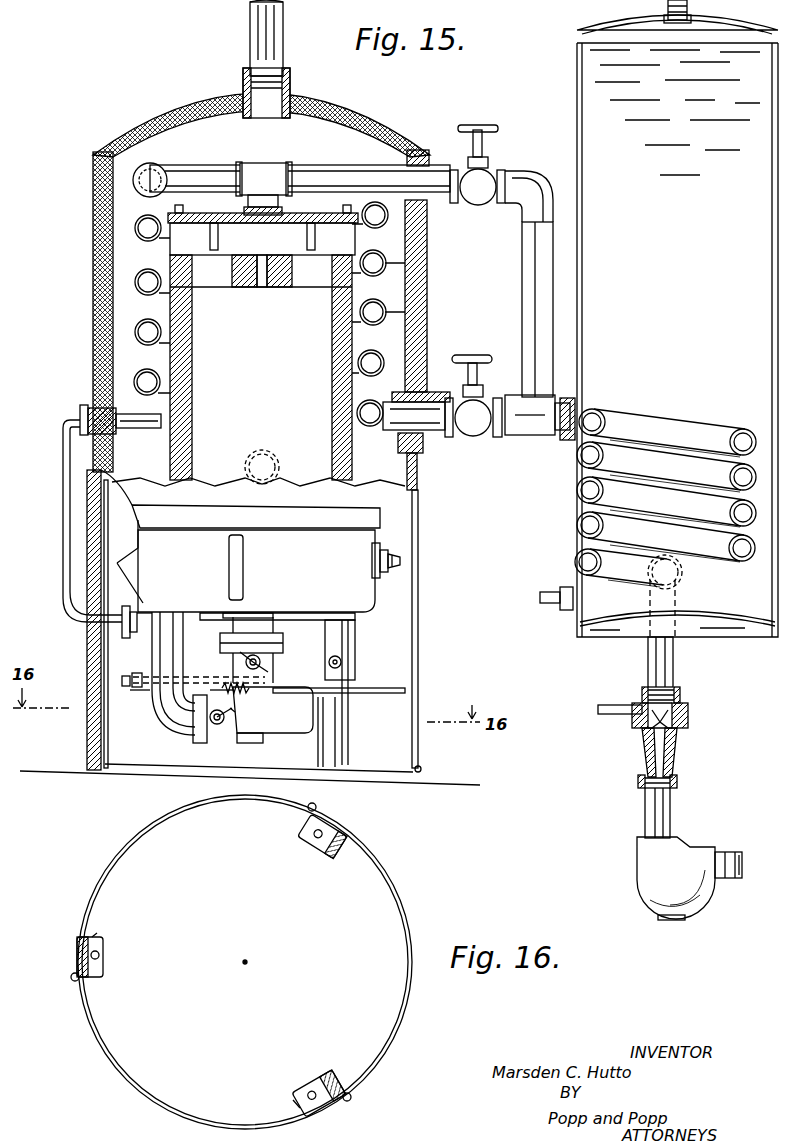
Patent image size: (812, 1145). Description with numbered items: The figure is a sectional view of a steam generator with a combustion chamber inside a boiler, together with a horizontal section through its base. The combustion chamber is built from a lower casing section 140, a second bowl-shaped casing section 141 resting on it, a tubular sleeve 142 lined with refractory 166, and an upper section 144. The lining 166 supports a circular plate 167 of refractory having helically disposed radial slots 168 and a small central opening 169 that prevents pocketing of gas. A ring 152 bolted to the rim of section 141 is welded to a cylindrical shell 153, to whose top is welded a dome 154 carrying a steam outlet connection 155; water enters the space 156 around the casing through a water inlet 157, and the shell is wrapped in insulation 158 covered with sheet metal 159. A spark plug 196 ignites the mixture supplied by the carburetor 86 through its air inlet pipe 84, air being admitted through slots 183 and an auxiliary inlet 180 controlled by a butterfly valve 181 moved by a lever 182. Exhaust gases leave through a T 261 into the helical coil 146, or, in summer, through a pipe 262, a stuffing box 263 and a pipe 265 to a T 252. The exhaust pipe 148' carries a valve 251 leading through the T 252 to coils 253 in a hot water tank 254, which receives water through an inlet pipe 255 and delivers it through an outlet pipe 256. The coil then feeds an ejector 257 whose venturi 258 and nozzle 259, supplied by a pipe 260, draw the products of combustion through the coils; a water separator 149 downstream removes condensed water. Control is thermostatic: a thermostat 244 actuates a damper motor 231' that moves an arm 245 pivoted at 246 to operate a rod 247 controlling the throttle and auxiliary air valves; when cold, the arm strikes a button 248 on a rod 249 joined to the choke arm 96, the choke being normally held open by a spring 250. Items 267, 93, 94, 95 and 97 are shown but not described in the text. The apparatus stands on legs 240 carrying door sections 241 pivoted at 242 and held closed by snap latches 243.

In FIG. 15, the steam outlet connection 155 is at (286, 58).
In FIG. 15, the sheet metal 159 is at (217, 97).
In FIG. 15, the dome 154 is at (195, 120).
In FIG. 15, the insulation 158 is at (93, 313).
In FIG. 15, the cylindrical shell 153 is at (113, 358).
In FIG. 15, the helical coil 146 is at (387, 263).
In FIG. 15, the space 156 is at (427, 323).
In FIG. 15, the refractory lining 166 is at (187, 377).
In FIG. 15, the circular plate 167 is at (287, 288).
In FIG. 15, the radial slots 168 is at (198, 283).
In FIG. 15, the central opening 169 is at (257, 293).
In FIG. 15, the upper section 144 is at (238, 231).
In FIG. 15, the T 261 is at (270, 173).
In FIG. 15, the pipe 262 is at (340, 170).
In FIG. 15, the stuffing box 263 is at (437, 167).
In FIG. 15, the valve handle 267 is at (497, 127).
In FIG. 15, the pipe 265 is at (527, 282).
In FIG. 15, the valve 251 is at (478, 356).
In FIG. 15, the T 252 is at (532, 432).
In FIG. 15, the coils 253 is at (677, 425).
In FIG. 15, the hot water tank 254 is at (582, 190).
In FIG. 15, the outlet pipe 256 is at (668, 7).
In FIG. 15, the inlet pipe 255 is at (562, 597).
In FIG. 15, the exhaust pipe 148' is at (423, 441).
In FIG. 15, the thermostat 244 is at (161, 417).
In FIG. 15, the ring 152 is at (90, 450).
In FIG. 15, the tubular sleeve 142 is at (155, 463).
In FIG. 15, the water inlet 157 is at (270, 460).
In FIG. 15, the bowl-shaped casing section 141 is at (398, 515).
In FIG. 15, the lower casing section 140 is at (379, 601).
In FIG. 15, the slots 183 is at (240, 568).
In FIG. 15, the spark plug 196 is at (402, 560).
In FIG. 15, the pivot 246 is at (137, 613).
In FIG. 15, the damper motor 231' is at (83, 627).
In FIG. 15, the arm 245 is at (138, 665).
In FIG. 15, the button 248 is at (118, 685).
In FIG. 15, the rod 249 is at (147, 688).
In FIG. 15, the rod 247 is at (215, 680).
In FIG. 15, the block 93 is at (222, 647).
In FIG. 15, the cam 94 is at (225, 720).
In FIG. 15, the arm 96 is at (213, 700).
In FIG. 15, the flange 95 is at (220, 730).
In FIG. 15, the cam 97 is at (225, 720).
In FIG. 15, the spring 250 is at (262, 702).
In FIG. 15, the carburetor 86 is at (286, 743).
In FIG. 15, the inlet 180 is at (347, 643).
In FIG. 15, the butterfly valve 181 is at (341, 660).
In FIG. 15, the lever 182 is at (340, 686).
In FIG. 15, the door sections 241 is at (418, 680).
In FIG. 16, the door sections 241 is at (180, 810).
In FIG. 15, the legs 240 is at (87, 745).
In FIG. 16, the legs 240 is at (337, 830).
In FIG. 15, the air inlet pipe 84 is at (170, 728).
In FIG. 15, the pipe 260 is at (617, 708).
In FIG. 15, the ejector 257 is at (702, 713).
In FIG. 15, the venturi 258 is at (677, 753).
In FIG. 15, the nozzle 259 is at (652, 723).
In FIG. 15, the water separator 149 is at (742, 825).
In FIG. 16, the pivot 242 is at (73, 982).
In FIG. 16, the snap latches 243 is at (103, 932).